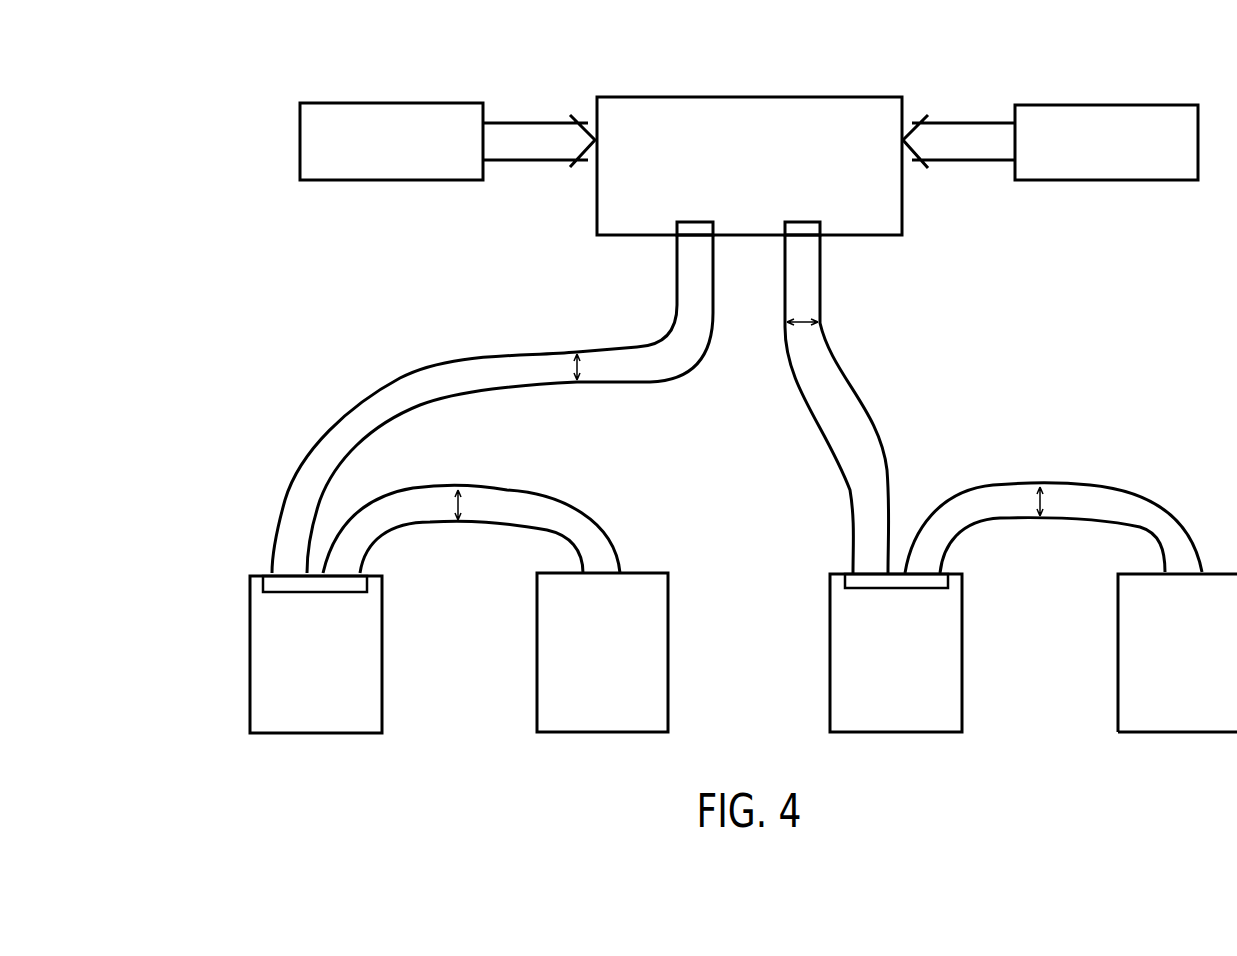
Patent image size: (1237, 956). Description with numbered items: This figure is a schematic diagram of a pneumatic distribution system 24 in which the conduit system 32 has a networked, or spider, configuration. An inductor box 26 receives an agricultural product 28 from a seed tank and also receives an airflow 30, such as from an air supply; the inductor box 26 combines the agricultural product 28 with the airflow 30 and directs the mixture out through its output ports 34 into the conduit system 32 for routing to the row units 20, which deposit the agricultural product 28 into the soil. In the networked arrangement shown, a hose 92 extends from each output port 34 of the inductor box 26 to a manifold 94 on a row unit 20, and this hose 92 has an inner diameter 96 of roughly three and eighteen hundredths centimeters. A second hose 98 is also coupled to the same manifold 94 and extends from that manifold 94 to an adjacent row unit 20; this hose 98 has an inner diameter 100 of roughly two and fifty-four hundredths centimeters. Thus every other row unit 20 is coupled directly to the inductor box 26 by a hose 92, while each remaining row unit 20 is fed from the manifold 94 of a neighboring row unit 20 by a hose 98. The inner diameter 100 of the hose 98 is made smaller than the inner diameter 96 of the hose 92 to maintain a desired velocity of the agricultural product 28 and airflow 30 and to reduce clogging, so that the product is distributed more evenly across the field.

The row unit 20 is at (305, 737).
The pneumatic distribution system 24 is at (217, 128).
The inductor box 26 is at (750, 97).
The agricultural product 28 is at (392, 103).
The airflow 30 is at (1107, 105).
The conduit system 32 is at (253, 343).
The output port 34 is at (697, 220).
The hose 92 is at (473, 355).
The manifold 94 is at (262, 580).
The inner diameter 96 is at (580, 367).
The hose 98 is at (528, 487).
The inner diameter 100 is at (453, 507).